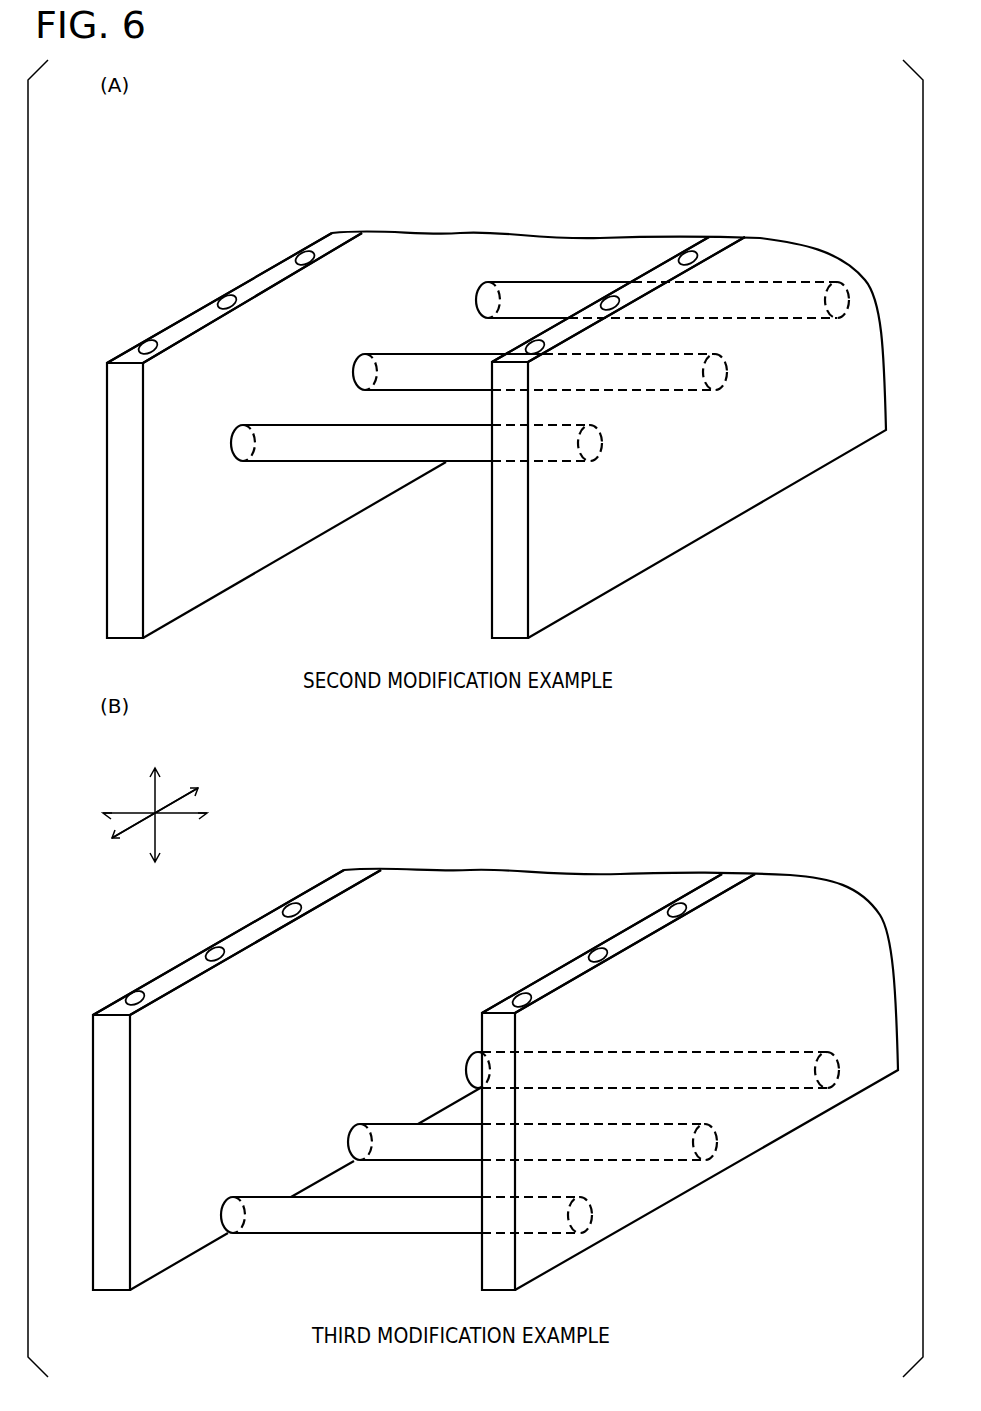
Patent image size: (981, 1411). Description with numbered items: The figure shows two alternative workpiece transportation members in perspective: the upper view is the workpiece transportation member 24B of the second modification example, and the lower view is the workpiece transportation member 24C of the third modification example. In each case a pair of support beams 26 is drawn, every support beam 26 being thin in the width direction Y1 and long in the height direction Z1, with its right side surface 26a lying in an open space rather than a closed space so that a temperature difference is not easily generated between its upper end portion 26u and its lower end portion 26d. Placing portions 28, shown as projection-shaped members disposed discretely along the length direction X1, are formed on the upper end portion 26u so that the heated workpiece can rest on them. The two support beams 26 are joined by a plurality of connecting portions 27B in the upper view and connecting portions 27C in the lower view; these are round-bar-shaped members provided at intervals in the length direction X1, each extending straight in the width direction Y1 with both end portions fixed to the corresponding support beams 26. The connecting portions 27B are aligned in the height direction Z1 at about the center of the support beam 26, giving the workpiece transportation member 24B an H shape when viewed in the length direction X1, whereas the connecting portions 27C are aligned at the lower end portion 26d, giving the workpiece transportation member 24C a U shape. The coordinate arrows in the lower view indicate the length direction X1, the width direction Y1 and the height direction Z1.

The workpiece transportation member 24B is at (285, 310).
The workpiece transportation member 24C is at (275, 960).
The support beam 26 is at (212, 357).
The upper end portion 26u is at (125, 358).
The right side surface 26a is at (240, 563).
The lower end portion 26d is at (128, 639).
The connecting portions 27B is at (517, 295).
The connecting portions 27C is at (470, 1050).
The placing portions 28 is at (147, 340).
The length direction X1 is at (175, 808).
The width direction Y1 is at (133, 812).
The height direction Z1 is at (157, 790).